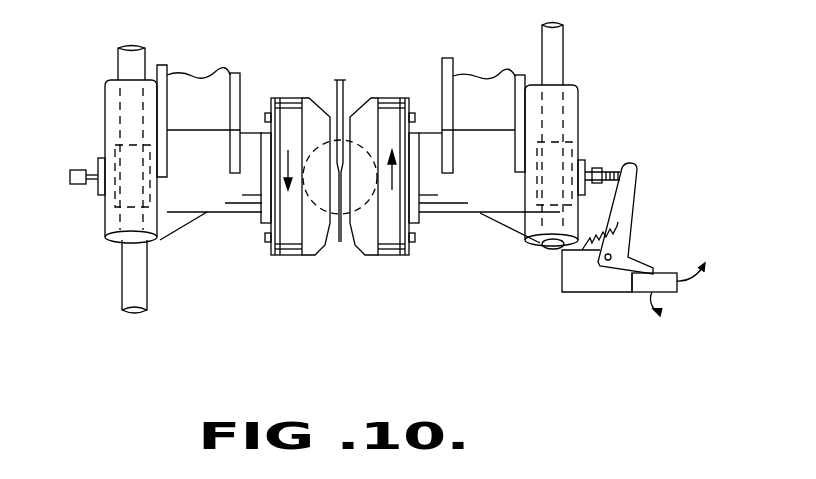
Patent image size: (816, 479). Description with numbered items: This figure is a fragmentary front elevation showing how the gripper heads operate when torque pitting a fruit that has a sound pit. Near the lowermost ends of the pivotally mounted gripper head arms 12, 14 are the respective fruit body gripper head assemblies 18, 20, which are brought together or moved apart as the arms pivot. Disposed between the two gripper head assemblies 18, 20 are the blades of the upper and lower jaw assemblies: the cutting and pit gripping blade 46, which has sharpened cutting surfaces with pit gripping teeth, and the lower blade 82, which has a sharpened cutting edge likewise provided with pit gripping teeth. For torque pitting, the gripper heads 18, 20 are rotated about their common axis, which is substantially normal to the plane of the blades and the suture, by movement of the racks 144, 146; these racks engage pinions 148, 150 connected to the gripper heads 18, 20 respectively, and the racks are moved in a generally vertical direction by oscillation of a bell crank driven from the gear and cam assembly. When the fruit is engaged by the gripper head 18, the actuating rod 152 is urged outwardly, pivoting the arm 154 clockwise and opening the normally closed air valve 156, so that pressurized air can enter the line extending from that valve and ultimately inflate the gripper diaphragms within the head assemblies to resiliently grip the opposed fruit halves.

The gripper head arm 12 is at (469, 78).
The gripper head arm 14 is at (193, 83).
The fruit body gripper head assembly 18 is at (387, 262).
The fruit body gripper head assembly 20 is at (304, 262).
The cutting and pit gripping blade 46 is at (341, 93).
The lower blade 82 is at (341, 243).
The rack 144 is at (562, 47).
The rack 146 is at (123, 62).
The pinion 148 is at (582, 120).
The pinion 150 is at (115, 193).
The actuating rod 152 is at (612, 172).
The arm 154 is at (625, 232).
The air valve 156 is at (670, 277).